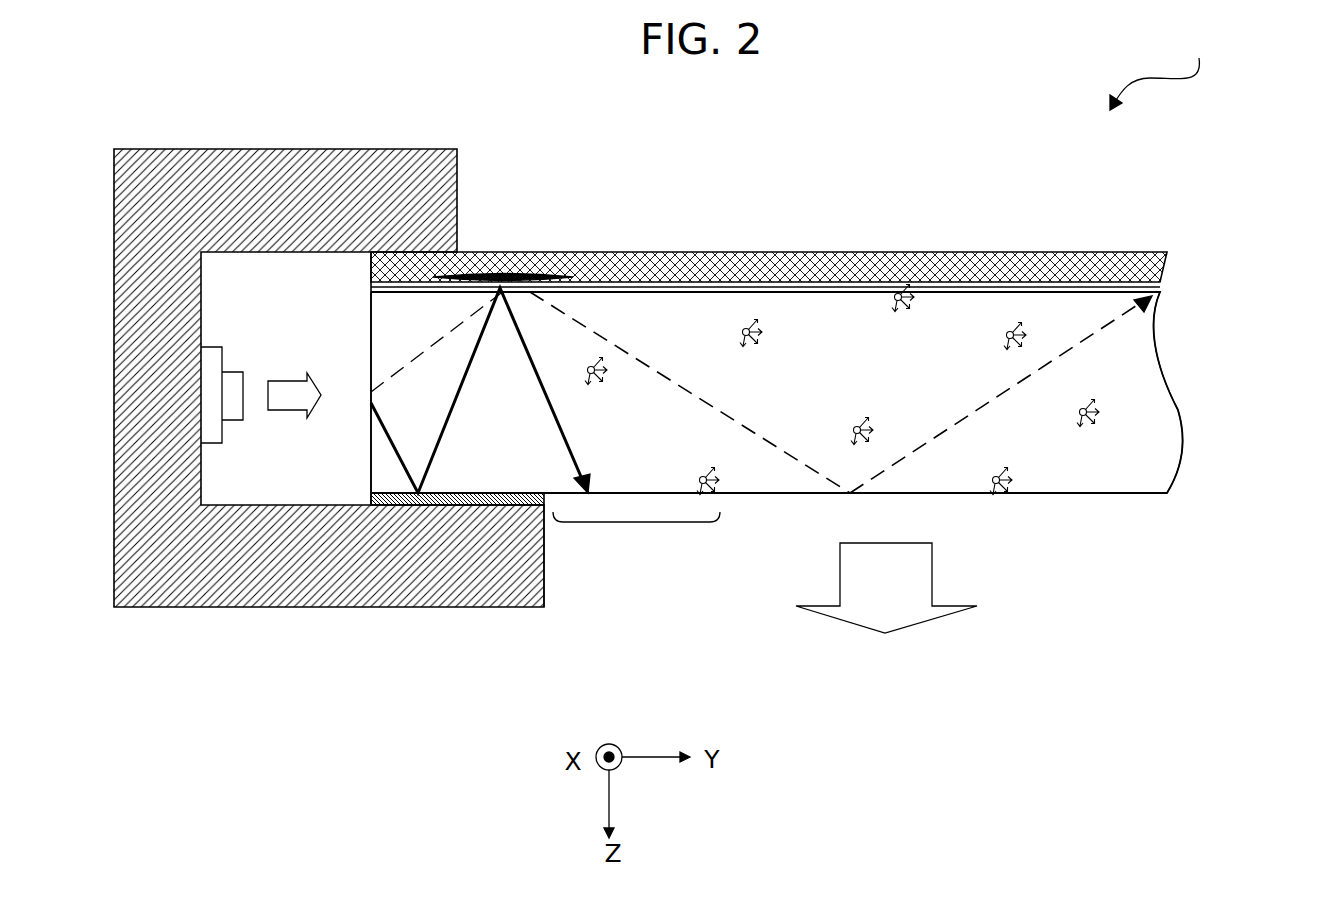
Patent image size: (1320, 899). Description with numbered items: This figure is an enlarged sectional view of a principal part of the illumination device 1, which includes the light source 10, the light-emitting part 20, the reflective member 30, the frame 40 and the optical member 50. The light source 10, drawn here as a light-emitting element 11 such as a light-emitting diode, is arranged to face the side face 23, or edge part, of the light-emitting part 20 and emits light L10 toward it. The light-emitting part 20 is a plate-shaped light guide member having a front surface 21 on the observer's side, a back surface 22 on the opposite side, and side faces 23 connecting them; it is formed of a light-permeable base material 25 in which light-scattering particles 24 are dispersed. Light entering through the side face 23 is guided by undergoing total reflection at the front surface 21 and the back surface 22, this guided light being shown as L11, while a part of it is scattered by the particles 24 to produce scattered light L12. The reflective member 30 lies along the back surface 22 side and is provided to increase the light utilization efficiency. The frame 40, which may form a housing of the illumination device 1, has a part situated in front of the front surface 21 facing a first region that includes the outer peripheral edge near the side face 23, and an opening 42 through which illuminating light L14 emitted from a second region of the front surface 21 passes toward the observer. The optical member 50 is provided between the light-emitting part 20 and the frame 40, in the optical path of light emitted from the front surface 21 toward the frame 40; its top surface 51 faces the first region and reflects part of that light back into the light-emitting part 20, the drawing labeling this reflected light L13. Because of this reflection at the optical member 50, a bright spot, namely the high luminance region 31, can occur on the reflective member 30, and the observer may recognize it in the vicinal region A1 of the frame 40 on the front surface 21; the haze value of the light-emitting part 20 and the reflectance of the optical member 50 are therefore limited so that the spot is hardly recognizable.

The illumination device 1 is at (1159, 68).
The light source 10 is at (207, 446).
The light-emitting element 11 is at (225, 356).
The light-emitting part 20 is at (1142, 462).
The front surface 21 is at (1115, 493).
The back surface 22 is at (1167, 250).
The side face 23 is at (352, 347).
The particles 24 is at (745, 326).
The base material 25 is at (1058, 307).
The reflective member 30 is at (947, 250).
The high luminance region 31 is at (510, 268).
The frame 40 is at (117, 149).
The opening 42 is at (544, 570).
The optical member 50 is at (365, 497).
The top surface 51 is at (485, 493).
The vicinal region A1 is at (637, 523).
The light L10 is at (300, 378).
The light undergoing total reflection L11 is at (620, 348).
The scattered light L12 is at (896, 292).
The reflected light L13 is at (462, 373).
The illuminating light L14 is at (927, 620).